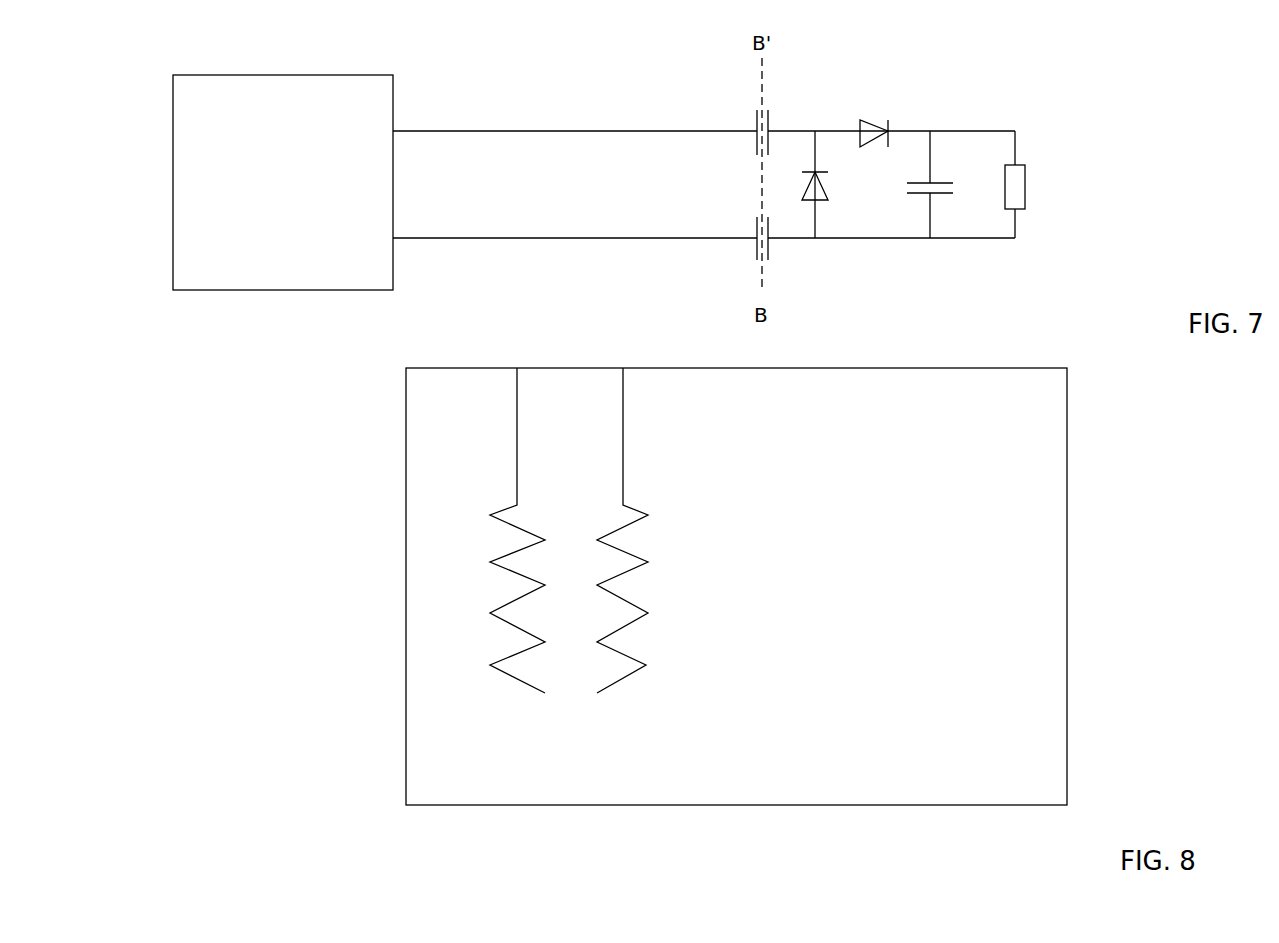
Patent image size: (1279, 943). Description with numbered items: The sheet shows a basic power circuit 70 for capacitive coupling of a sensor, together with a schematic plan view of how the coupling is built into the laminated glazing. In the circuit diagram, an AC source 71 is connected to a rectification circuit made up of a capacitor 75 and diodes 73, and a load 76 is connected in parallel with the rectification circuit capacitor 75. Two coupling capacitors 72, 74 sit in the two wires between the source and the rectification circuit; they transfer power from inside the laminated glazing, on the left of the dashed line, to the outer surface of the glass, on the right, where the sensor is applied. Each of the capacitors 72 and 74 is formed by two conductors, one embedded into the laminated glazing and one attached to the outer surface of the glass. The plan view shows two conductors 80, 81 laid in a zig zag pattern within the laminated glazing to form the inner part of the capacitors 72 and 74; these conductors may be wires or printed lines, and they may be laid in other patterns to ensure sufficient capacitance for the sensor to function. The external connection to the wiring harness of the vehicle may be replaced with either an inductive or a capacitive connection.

In FIG. 7, the power circuit 70 is at (1088, 100).
In FIG. 7, the AC source 71 is at (198, 285).
In FIG. 7, the capacitor 72 is at (757, 123).
In FIG. 7, the diode 73 is at (885, 108).
In FIG. 7, the capacitor 74 is at (753, 245).
In FIG. 7, the capacitor 75 is at (947, 212).
In FIG. 7, the load 76 is at (1032, 192).
In FIG. 8, the conductor 80 is at (492, 595).
In FIG. 8, the conductor 81 is at (620, 693).